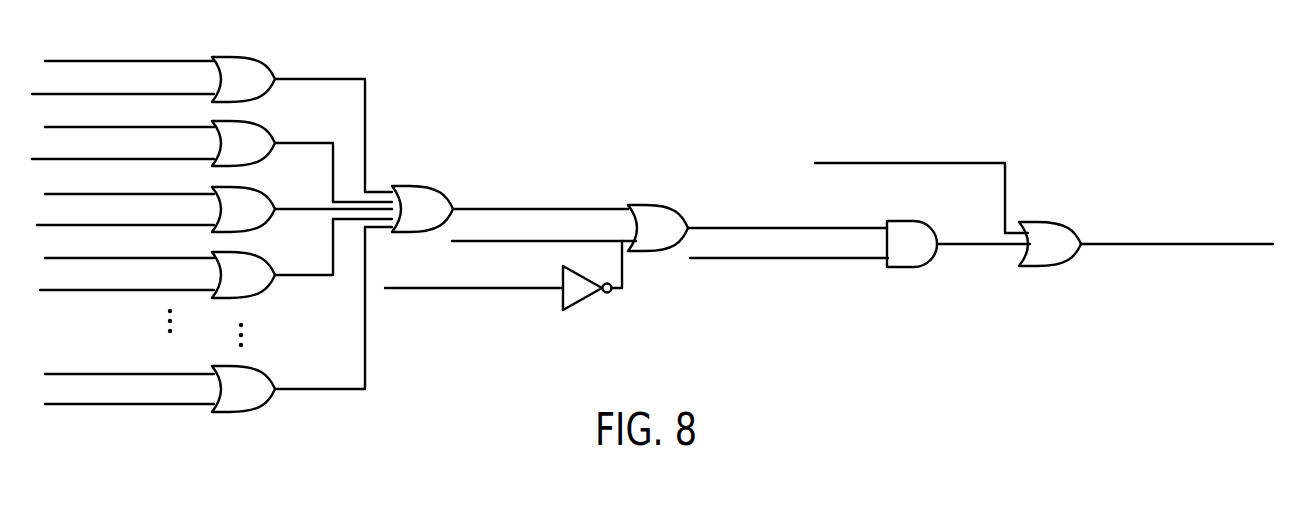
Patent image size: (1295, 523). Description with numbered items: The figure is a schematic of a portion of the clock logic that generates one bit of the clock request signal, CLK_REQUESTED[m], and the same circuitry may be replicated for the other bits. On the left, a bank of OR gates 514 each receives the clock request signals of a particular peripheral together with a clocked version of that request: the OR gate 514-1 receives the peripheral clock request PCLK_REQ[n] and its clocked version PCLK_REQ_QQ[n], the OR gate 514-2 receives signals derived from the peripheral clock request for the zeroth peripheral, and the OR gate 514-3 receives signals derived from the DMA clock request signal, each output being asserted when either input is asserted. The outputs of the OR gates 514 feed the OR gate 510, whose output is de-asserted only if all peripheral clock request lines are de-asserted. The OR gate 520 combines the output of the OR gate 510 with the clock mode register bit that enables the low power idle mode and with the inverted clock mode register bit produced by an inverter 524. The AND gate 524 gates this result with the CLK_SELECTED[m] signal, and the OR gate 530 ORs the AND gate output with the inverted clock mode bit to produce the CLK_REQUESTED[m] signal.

The OR gate 510 is at (432, 187).
The OR gates 514 is at (257, 57).
The OR gate 514-1 is at (262, 293).
The OR gate 514-2 is at (270, 379).
The OR gate 514-3 is at (268, 71).
The OR gate 520 is at (672, 207).
The AND gate 524 is at (585, 302).
The OR gate 530 is at (1068, 258).